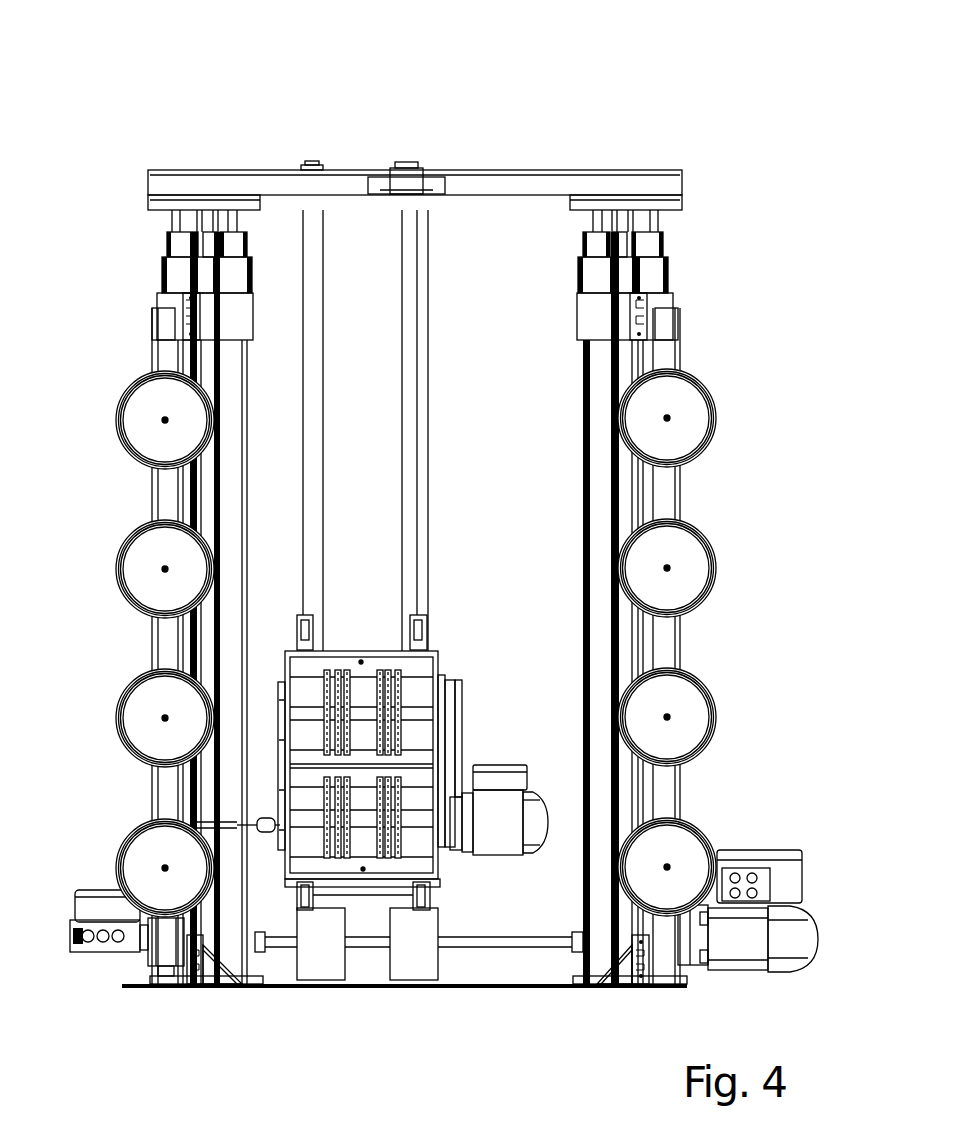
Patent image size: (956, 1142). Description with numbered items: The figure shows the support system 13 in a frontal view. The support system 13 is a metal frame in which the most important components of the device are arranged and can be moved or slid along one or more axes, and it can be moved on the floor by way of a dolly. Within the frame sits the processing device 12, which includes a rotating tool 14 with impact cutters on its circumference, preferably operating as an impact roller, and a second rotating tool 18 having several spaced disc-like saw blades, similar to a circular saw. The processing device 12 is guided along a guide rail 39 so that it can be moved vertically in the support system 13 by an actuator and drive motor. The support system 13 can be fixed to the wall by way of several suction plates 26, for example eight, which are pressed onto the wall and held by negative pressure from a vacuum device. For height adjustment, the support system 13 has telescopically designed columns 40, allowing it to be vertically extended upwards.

The support system 13 is at (548, 133).
The telescopically designed columns 40 is at (183, 270).
The guide rail 39 is at (408, 280).
The suction plates 26 is at (138, 427).
The processing device 12 is at (466, 634).
The second rotating tool 18 is at (418, 736).
The rotating tool 14 is at (418, 845).